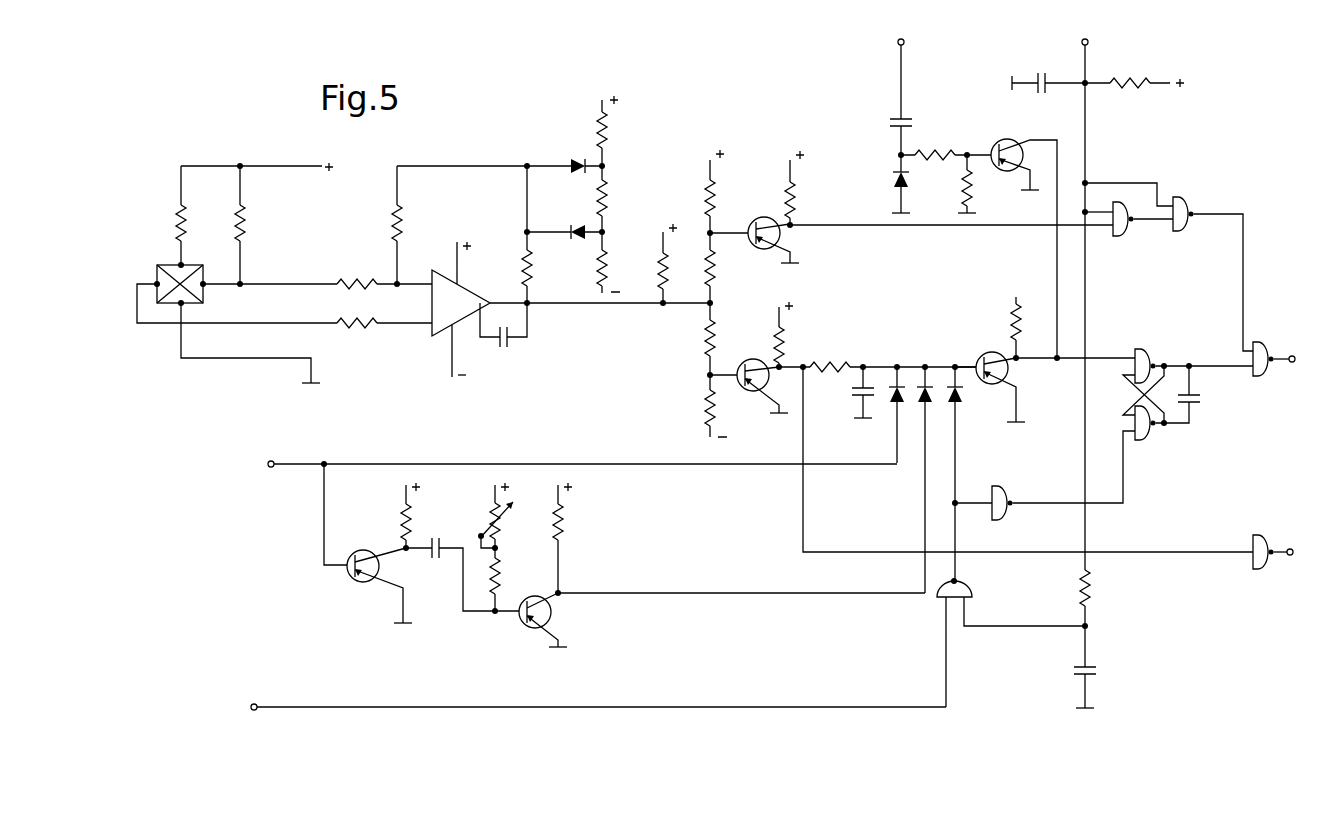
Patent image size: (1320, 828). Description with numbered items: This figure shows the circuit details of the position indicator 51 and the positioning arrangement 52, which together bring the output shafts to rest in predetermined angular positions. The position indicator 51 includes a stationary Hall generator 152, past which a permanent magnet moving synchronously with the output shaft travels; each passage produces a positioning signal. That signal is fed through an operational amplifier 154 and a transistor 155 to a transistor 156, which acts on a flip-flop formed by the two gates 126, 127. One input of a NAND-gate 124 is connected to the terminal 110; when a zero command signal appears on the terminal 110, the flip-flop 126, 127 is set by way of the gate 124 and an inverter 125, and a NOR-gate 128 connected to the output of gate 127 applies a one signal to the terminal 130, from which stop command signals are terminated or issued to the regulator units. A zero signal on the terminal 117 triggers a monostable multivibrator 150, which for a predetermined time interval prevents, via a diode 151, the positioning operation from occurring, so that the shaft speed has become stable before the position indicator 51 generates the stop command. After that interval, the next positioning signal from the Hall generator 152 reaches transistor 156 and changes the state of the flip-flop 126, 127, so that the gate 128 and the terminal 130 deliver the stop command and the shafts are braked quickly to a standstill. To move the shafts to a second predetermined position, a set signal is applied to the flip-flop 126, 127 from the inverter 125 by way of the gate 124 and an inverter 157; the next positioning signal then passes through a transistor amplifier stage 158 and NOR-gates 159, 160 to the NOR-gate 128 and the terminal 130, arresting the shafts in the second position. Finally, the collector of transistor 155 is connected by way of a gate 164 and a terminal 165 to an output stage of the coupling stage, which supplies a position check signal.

The position indicator unit 51 is at (265, 272).
The Hall generator 152 is at (208, 300).
The operational amplifier 154 is at (460, 318).
The positioning arrangement 52 is at (740, 116).
The transistor amplifier stage 158 is at (759, 250).
The inverter 157 is at (1092, 42).
The NOR-gate 159 is at (1131, 238).
The NOR-gate 160 is at (1193, 205).
The transistor 155 is at (750, 390).
The diode 151 is at (922, 386).
The transistor 156 is at (985, 352).
The gate of flip-flop 127 is at (1143, 350).
The gate of flip-flop 126 is at (1147, 440).
The NOR-gate 128 is at (1264, 377).
The terminal 130 is at (1292, 356).
The inverter 125 is at (1007, 512).
The NAND-gate 124 is at (973, 590).
The gate 164 is at (1263, 568).
The terminal 165 is at (1277, 551).
The terminal 117 is at (271, 467).
The monostable multivibrator 150 is at (353, 582).
The terminal 110 is at (254, 704).